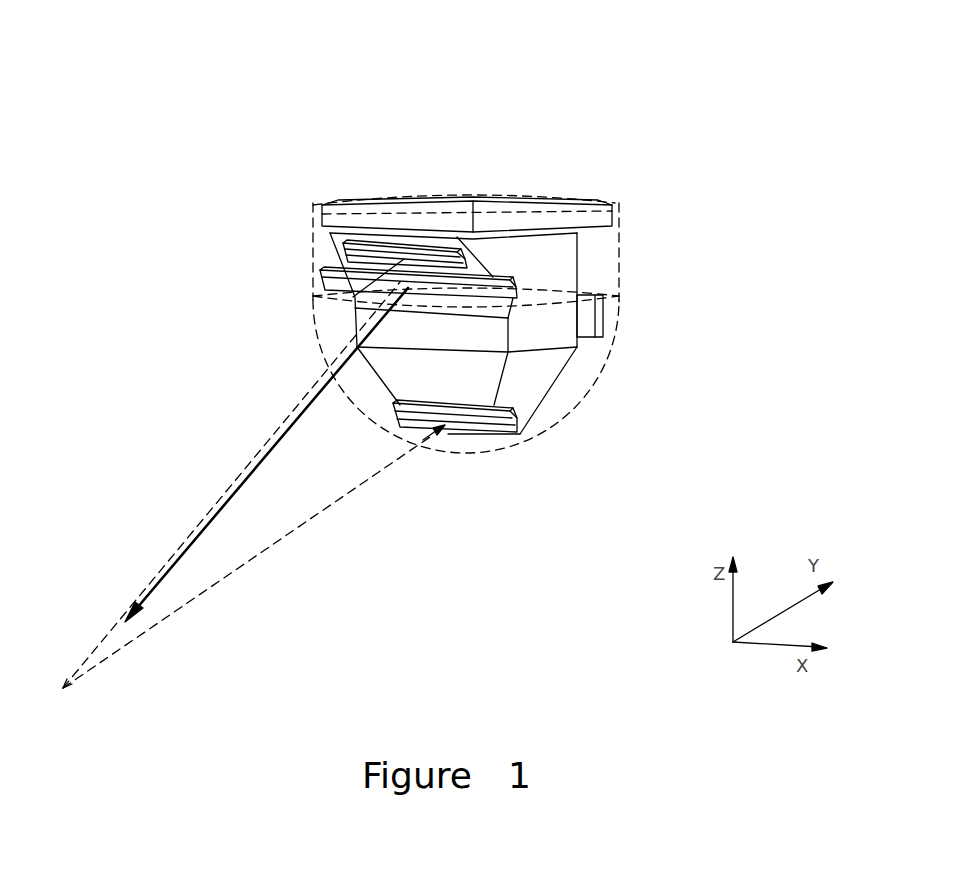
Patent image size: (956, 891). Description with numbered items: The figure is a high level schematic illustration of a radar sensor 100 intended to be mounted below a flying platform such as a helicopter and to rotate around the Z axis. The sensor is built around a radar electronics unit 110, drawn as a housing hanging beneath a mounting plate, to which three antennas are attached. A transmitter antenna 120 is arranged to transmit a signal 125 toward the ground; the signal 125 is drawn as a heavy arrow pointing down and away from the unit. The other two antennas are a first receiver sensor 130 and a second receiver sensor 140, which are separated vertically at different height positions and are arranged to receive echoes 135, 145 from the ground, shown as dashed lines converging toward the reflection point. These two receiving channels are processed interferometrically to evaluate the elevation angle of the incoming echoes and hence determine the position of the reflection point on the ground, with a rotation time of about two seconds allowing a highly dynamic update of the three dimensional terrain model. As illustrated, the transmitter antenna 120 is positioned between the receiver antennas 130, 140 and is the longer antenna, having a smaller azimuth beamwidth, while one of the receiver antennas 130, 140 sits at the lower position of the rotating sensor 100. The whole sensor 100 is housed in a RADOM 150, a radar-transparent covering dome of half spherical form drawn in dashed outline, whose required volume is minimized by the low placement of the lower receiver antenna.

The radar sensor 100 is at (530, 35).
The radar electronics unit 110 is at (562, 268).
The transmitter antenna 120 is at (330, 284).
The signal 125 is at (250, 476).
The first receiver sensor 130 is at (341, 262).
The echo 135 is at (297, 402).
The second receiver sensor 140 is at (477, 415).
The echo 145 is at (240, 567).
The RADOM 150 is at (590, 370).